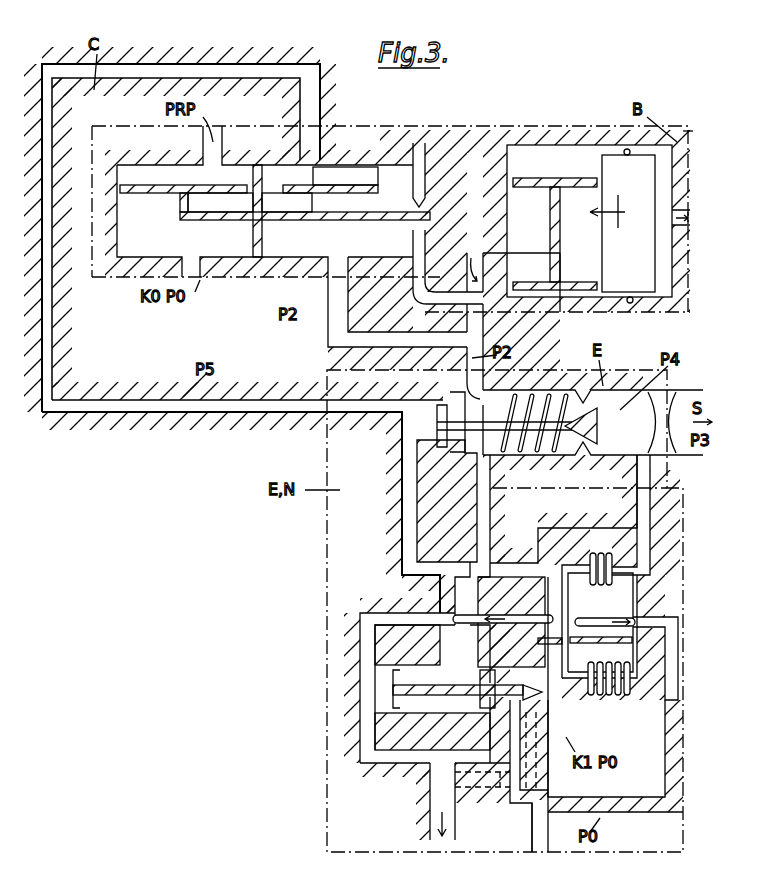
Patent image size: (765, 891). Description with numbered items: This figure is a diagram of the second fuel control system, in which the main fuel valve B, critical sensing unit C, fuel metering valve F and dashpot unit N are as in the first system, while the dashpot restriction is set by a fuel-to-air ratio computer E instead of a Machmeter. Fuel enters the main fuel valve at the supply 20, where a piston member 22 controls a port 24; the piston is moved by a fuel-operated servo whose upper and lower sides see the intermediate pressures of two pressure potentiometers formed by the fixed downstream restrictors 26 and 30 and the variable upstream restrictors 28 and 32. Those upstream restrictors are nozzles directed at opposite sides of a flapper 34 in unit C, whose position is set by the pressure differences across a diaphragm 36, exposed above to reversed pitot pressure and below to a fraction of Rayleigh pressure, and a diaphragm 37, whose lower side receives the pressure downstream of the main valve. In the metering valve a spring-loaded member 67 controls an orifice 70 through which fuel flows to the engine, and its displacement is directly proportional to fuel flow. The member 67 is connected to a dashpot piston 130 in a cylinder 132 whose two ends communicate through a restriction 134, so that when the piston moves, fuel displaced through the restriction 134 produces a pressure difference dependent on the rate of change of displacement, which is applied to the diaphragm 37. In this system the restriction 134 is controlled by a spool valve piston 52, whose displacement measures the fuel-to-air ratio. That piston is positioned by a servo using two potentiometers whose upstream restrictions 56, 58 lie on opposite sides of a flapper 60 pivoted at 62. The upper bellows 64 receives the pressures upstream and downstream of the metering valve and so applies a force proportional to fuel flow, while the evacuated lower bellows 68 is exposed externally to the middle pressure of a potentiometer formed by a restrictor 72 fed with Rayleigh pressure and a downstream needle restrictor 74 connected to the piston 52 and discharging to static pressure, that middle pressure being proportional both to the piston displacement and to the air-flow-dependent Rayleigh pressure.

The fuel supply 20 is at (622, 223).
The piston member 22 is at (576, 236).
The port 24 is at (589, 221).
The restrictor 26 is at (625, 150).
The restrictor 28 is at (417, 193).
The restrictor 30 is at (630, 304).
The restrictor 32 is at (417, 232).
The flapper 34 is at (357, 218).
The diaphragm 36 is at (167, 200).
The diaphragm 37 is at (300, 186).
The spool valve piston 52 is at (422, 695).
The upstream restriction 56 is at (535, 618).
The upstream restriction 58 is at (612, 608).
The flapper 60 is at (578, 602).
The pivot 62 is at (585, 650).
The upper bellows 64 is at (595, 563).
The spring-loaded member 67 is at (549, 400).
The lower bellows 68 is at (625, 680).
The orifice 70 is at (587, 442).
The restrictor 72 is at (539, 830).
The restrictor 74 is at (540, 694).
The dashpot piston 130 is at (463, 457).
The cylinder 132 is at (415, 430).
The restriction 134 is at (480, 673).